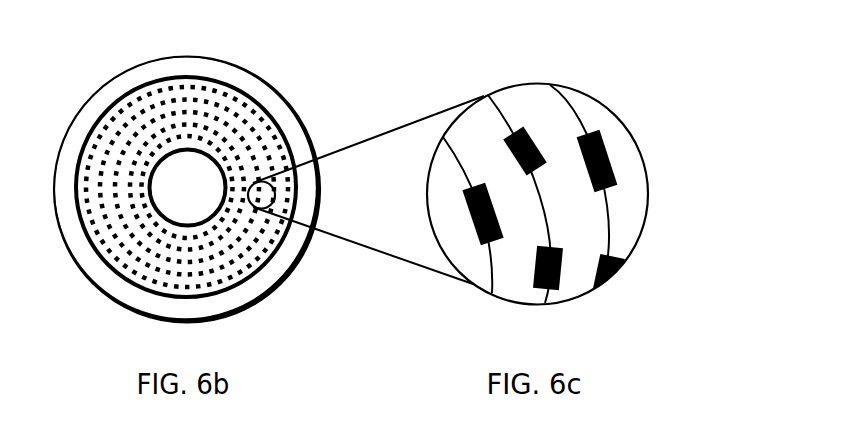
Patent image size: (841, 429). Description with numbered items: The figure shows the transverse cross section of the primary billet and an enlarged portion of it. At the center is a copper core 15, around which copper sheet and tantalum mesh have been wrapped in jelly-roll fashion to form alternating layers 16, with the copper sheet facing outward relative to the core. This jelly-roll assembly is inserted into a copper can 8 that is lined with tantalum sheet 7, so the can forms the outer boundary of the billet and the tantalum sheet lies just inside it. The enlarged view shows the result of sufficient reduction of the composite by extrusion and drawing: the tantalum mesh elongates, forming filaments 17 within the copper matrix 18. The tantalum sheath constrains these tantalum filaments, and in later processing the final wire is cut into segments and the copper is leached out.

In FIG. 6b, the copper can 8 is at (185, 57).
In FIG. 6b, the tantalum sheet 7 is at (232, 88).
In FIG. 6b, the alternating layers 16 is at (145, 125).
In FIG. 6b, the copper core 15 is at (172, 194).
In FIG. 6c, the copper matrix 18 is at (477, 122).
In FIG. 6c, the filaments 17 is at (606, 141).